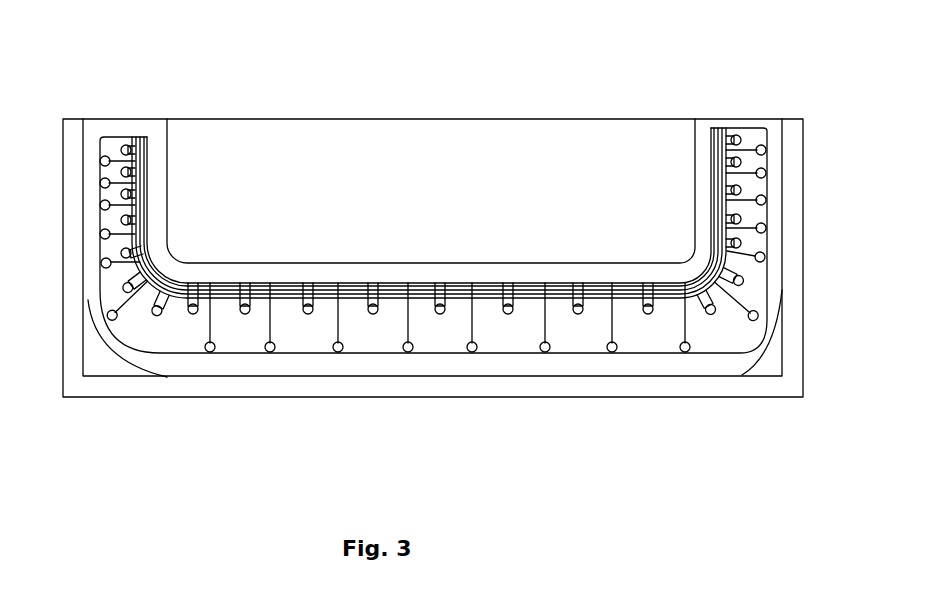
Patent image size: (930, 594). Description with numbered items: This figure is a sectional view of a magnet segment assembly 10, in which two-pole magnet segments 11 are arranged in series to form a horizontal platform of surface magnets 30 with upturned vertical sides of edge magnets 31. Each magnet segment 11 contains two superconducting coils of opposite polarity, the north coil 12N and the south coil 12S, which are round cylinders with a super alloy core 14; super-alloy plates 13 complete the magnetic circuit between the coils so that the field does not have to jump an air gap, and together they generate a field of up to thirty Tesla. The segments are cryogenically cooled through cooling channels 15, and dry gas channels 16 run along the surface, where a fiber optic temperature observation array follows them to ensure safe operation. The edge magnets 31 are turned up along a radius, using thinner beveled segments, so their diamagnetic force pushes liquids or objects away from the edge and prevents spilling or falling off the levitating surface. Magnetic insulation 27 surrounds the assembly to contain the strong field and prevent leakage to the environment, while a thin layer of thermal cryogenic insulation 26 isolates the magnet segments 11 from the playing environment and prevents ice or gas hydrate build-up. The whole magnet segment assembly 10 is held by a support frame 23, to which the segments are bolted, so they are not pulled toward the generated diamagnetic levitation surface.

The magnet segment assembly 10 is at (346, 78).
The two-pole magnet segment 11 is at (124, 136).
The superconducting coil (north polarity) 12N is at (227, 265).
The superconducting coil (south polarity) 12S is at (263, 265).
The super-alloy plate 13 is at (758, 187).
The super alloy core 14 is at (402, 285).
The cryogenic cooling channel 15 is at (338, 353).
The dry gas channel 16 is at (540, 285).
The support frame 23 is at (72, 353).
The thermal cryogenic insulation 26 is at (163, 127).
The magnetic insulation 27 is at (108, 122).
The surface magnets 30 is at (429, 208).
The edge magnets 31 is at (184, 177).